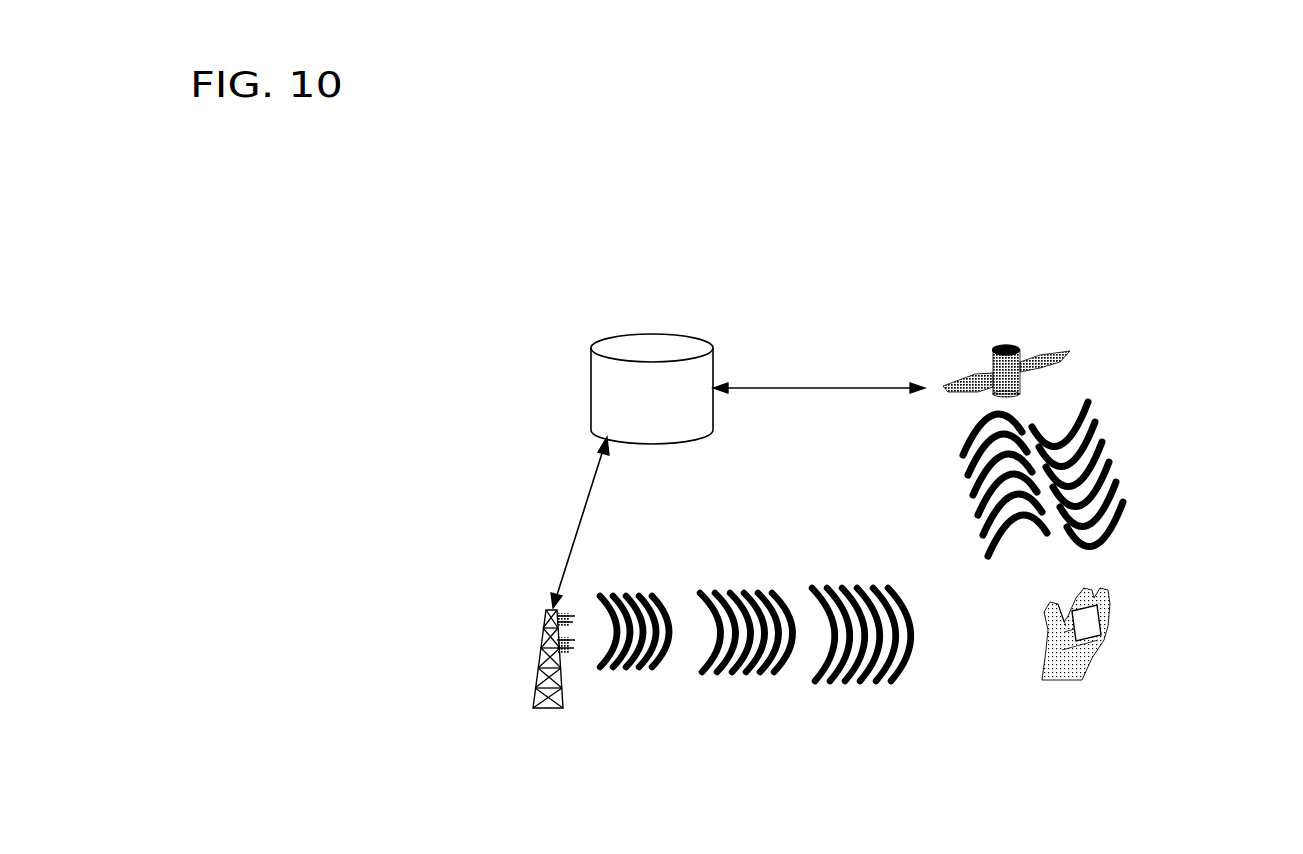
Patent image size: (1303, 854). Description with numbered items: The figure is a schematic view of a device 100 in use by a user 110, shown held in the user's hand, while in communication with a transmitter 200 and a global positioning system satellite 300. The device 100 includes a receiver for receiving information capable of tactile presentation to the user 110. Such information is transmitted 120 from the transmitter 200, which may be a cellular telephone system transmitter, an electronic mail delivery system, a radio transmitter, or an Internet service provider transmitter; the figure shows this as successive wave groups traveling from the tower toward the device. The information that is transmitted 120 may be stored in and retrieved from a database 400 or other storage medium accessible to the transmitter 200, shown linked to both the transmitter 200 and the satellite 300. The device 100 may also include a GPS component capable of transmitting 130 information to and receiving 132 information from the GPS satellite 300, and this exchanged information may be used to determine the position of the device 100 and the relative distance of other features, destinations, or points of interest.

The device 100 is at (1104, 626).
The user 110 is at (1065, 680).
The transmitted information 120 is at (746, 672).
The transmitting information to GPS satellite 130 is at (986, 542).
The receiving information from GPS satellite 132 is at (1118, 495).
The transmitter 200 is at (545, 637).
The GPS satellite 300 is at (995, 362).
The database 400 is at (630, 402).